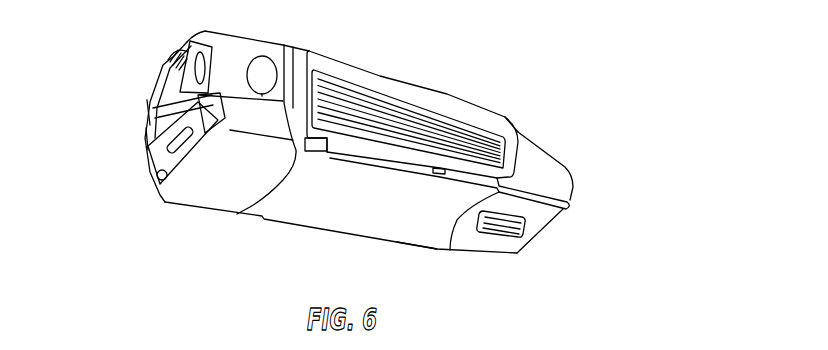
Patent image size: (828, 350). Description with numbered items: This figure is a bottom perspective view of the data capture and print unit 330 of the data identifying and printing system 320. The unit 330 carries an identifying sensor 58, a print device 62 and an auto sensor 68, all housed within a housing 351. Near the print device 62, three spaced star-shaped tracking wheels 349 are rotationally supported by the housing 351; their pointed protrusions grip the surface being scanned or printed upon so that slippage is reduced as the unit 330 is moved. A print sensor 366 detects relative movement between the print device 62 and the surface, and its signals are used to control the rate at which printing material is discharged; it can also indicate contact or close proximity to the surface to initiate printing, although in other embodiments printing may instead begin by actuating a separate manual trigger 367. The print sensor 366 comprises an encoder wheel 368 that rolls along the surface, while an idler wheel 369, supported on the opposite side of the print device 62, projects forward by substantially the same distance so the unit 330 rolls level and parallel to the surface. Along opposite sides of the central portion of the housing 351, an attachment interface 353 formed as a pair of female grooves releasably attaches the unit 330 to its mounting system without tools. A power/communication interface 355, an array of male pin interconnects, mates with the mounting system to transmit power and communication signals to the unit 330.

The data identifying and printing system 320 is at (663, 143).
The data capture and print unit 330 is at (446, 89).
The tracking wheels 349 is at (177, 55).
The housing 351 is at (501, 116).
The attachment interface 353 is at (445, 194).
The power/communication interface 355 is at (525, 226).
The print sensor 366 is at (141, 132).
The manual trigger 367 is at (266, 86).
The encoder wheel 368 is at (213, 47).
The idler wheel 369 is at (140, 113).
The identifying sensor 58 is at (166, 204).
The print device 62 is at (167, 78).
The auto sensor 68 is at (155, 176).